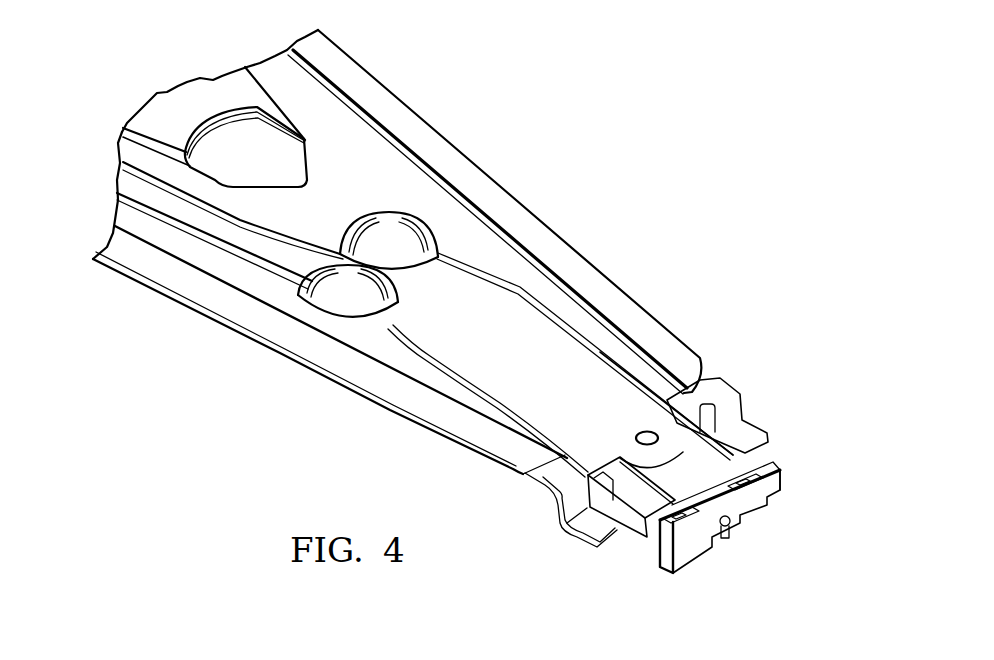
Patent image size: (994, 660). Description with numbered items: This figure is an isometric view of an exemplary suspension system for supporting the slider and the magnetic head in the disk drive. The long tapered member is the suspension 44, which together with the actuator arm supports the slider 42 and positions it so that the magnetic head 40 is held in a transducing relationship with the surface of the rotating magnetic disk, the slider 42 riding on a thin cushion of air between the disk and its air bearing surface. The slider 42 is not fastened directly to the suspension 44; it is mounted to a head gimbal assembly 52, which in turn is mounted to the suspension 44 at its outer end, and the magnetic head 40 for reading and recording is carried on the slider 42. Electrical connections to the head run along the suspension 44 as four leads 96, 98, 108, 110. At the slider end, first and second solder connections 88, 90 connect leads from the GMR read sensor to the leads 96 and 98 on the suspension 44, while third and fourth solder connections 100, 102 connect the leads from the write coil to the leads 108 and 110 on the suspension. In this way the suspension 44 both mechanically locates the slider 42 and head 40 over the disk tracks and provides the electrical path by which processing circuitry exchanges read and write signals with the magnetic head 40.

The suspension 44 is at (560, 213).
The lead 96 is at (430, 353).
The lead 108 is at (447, 357).
The lead 110 is at (527, 303).
The lead 98 is at (612, 340).
The head gimbal assembly 52 is at (675, 462).
The slider 42 is at (612, 553).
The first solder connection 88 is at (662, 527).
The third solder connection 100 is at (697, 522).
The second solder connection 90 is at (762, 502).
The fourth solder connection 102 is at (781, 504).
The magnetic head 40 is at (733, 540).